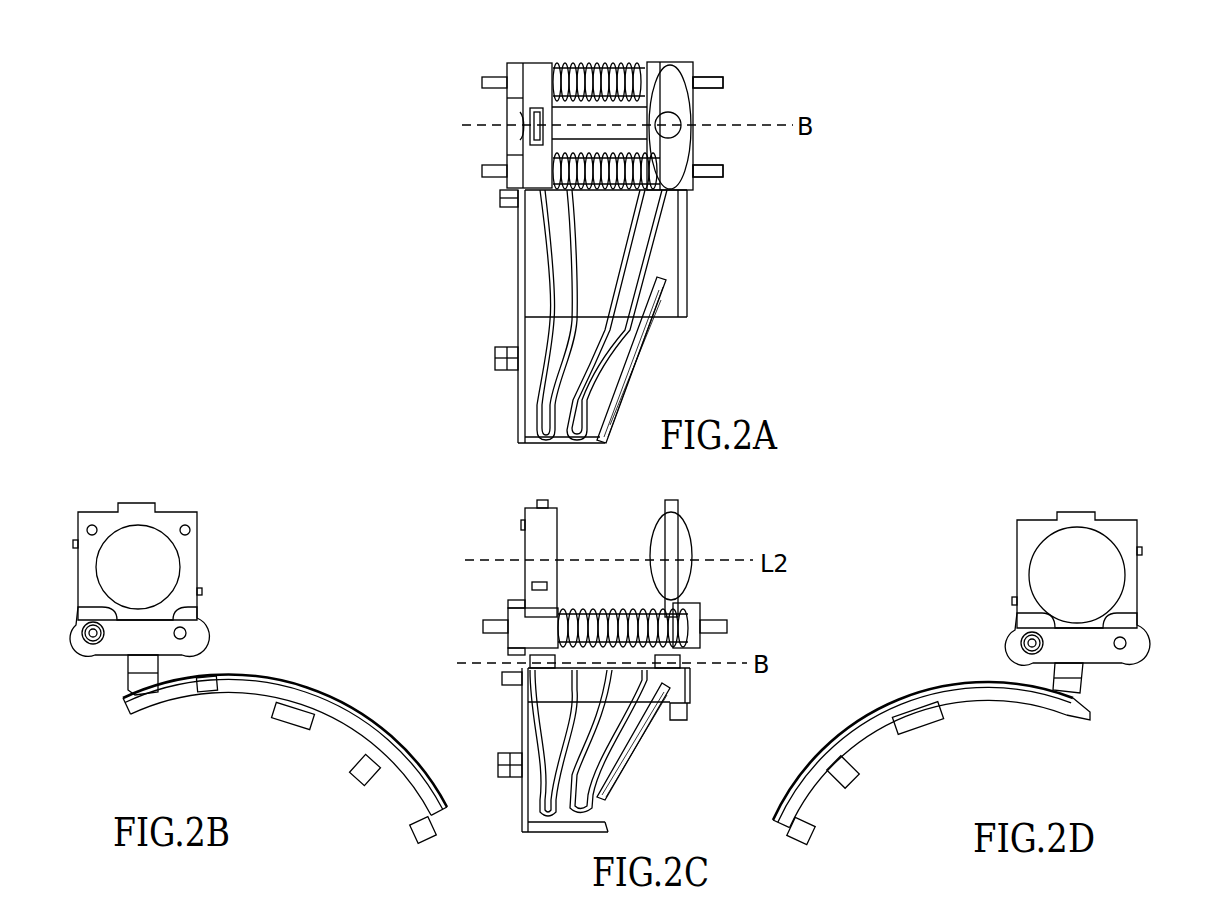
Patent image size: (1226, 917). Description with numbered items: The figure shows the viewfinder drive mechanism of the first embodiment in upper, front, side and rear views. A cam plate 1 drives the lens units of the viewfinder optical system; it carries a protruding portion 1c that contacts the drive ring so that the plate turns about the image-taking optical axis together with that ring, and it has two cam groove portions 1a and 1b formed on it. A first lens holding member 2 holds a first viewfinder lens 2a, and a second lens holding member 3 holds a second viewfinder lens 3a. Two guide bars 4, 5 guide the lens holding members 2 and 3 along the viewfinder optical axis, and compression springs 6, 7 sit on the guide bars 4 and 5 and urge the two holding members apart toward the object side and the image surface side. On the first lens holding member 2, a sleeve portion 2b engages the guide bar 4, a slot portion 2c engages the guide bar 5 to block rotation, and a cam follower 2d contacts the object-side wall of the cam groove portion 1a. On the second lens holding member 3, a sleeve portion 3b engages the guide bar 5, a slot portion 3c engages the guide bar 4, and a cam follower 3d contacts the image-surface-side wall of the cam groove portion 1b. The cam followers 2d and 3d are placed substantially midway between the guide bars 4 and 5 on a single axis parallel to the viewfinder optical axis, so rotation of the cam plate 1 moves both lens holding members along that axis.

In FIG. 2A, the cam plate 1 is at (673, 293).
In FIG. 2B, the cam plate 1 is at (363, 732).
In FIG. 2C, the cam plate 1 is at (537, 813).
In FIG. 2D, the cam plate 1 is at (870, 730).
In FIG. 2A, the cam groove portion 1a is at (565, 242).
In FIG. 2C, the cam groove portion 1a is at (558, 740).
In FIG. 2A, the cam groove portion 1b is at (608, 335).
In FIG. 2C, the cam groove portion 1b is at (603, 743).
In FIG. 2A, the protruding portion 1c is at (495, 348).
In FIG. 2B, the protruding portion 1c is at (353, 775).
In FIG. 2C, the protruding portion 1c is at (513, 775).
In FIG. 2A, the first lens holding member 2 is at (540, 67).
In FIG. 2B, the first lens holding member 2 is at (190, 545).
In FIG. 2C, the first lens holding member 2 is at (533, 547).
In FIG. 2B, the first viewfinder lens 2a is at (153, 537).
In FIG. 2B, the sleeve portion 2b is at (197, 640).
In FIG. 2B, the slot portion 2c is at (92, 645).
In FIG. 2A, the cam follower 2d is at (520, 127).
In FIG. 2B, the cam follower 2d is at (135, 673).
In FIG. 2C, the cam follower 2d is at (540, 672).
In FIG. 2A, the second lens holding member 3 is at (670, 68).
In FIG. 2C, the second lens holding member 3 is at (673, 542).
In FIG. 2D, the second lens holding member 3 is at (1117, 523).
In FIG. 2D, the second viewfinder lens 3a is at (1113, 570).
In FIG. 2D, the sleeve portion 3b is at (1133, 650).
In FIG. 2D, the slot portion 3c is at (1028, 648).
In FIG. 2A, the cam follower 3d is at (675, 122).
In FIG. 2C, the cam follower 3d is at (673, 687).
In FIG. 2D, the cam follower 3d is at (1087, 690).
In FIG. 2A, the guide bar 4 is at (723, 175).
In FIG. 2B, the guide bar 4 is at (185, 632).
In FIG. 2C, the guide bar 4 is at (727, 627).
In FIG. 2D, the guide bar 4 is at (1027, 627).
In FIG. 2A, the guide bar 5 is at (723, 83).
In FIG. 2B, the guide bar 5 is at (83, 625).
In FIG. 2D, the guide bar 5 is at (1130, 637).
In FIG. 2A, the compression spring 6 is at (620, 193).
In FIG. 2C, the compression spring 6 is at (613, 608).
In FIG. 2A, the compression spring 7 is at (603, 62).